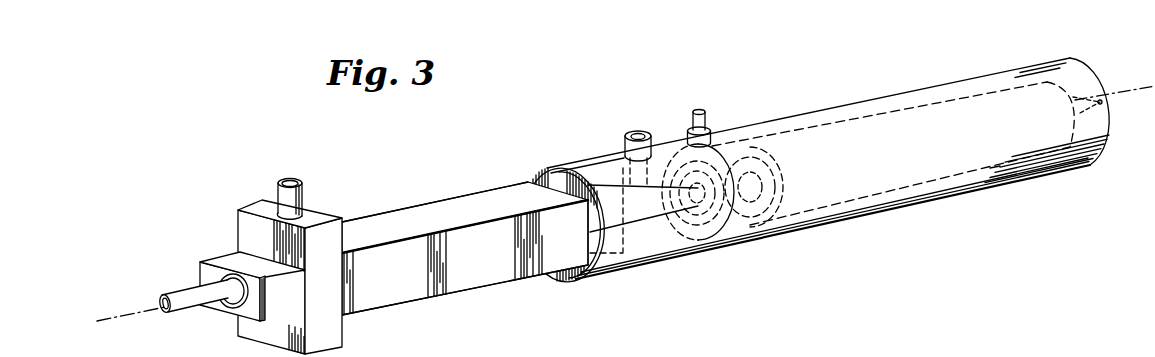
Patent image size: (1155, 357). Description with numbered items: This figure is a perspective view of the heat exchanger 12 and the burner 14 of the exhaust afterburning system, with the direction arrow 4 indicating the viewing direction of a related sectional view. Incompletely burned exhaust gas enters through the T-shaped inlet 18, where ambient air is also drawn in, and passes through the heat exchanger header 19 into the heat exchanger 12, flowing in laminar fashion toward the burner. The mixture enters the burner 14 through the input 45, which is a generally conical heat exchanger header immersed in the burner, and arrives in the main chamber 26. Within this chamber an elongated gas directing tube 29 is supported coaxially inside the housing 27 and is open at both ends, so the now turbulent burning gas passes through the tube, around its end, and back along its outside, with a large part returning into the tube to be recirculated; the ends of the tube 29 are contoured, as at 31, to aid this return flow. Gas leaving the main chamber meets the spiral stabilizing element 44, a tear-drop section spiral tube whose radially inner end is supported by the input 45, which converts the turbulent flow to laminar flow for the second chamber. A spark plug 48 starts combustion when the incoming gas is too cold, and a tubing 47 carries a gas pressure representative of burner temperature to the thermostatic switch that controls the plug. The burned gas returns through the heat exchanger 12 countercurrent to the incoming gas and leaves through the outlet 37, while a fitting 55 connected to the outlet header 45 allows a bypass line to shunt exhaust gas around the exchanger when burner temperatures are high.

The section line / viewing direction arrow 4 is at (98, 321).
The heat exchanger 12 is at (435, 183).
The burner 14 is at (859, 81).
The T-shaped inlet 18 is at (303, 193).
The heat exchanger header 19 is at (237, 225).
The main chamber 26 is at (895, 102).
The housing 27 is at (893, 208).
The gas directing tube 29 is at (993, 163).
The contoured tube end 31 is at (754, 229).
The outlet 37 is at (181, 288).
The spiral stabilizing element 44 is at (729, 243).
The input 45 is at (645, 264).
The tubing 47 is at (703, 113).
The spark plug 48 is at (1100, 92).
The fitting 55 is at (627, 135).